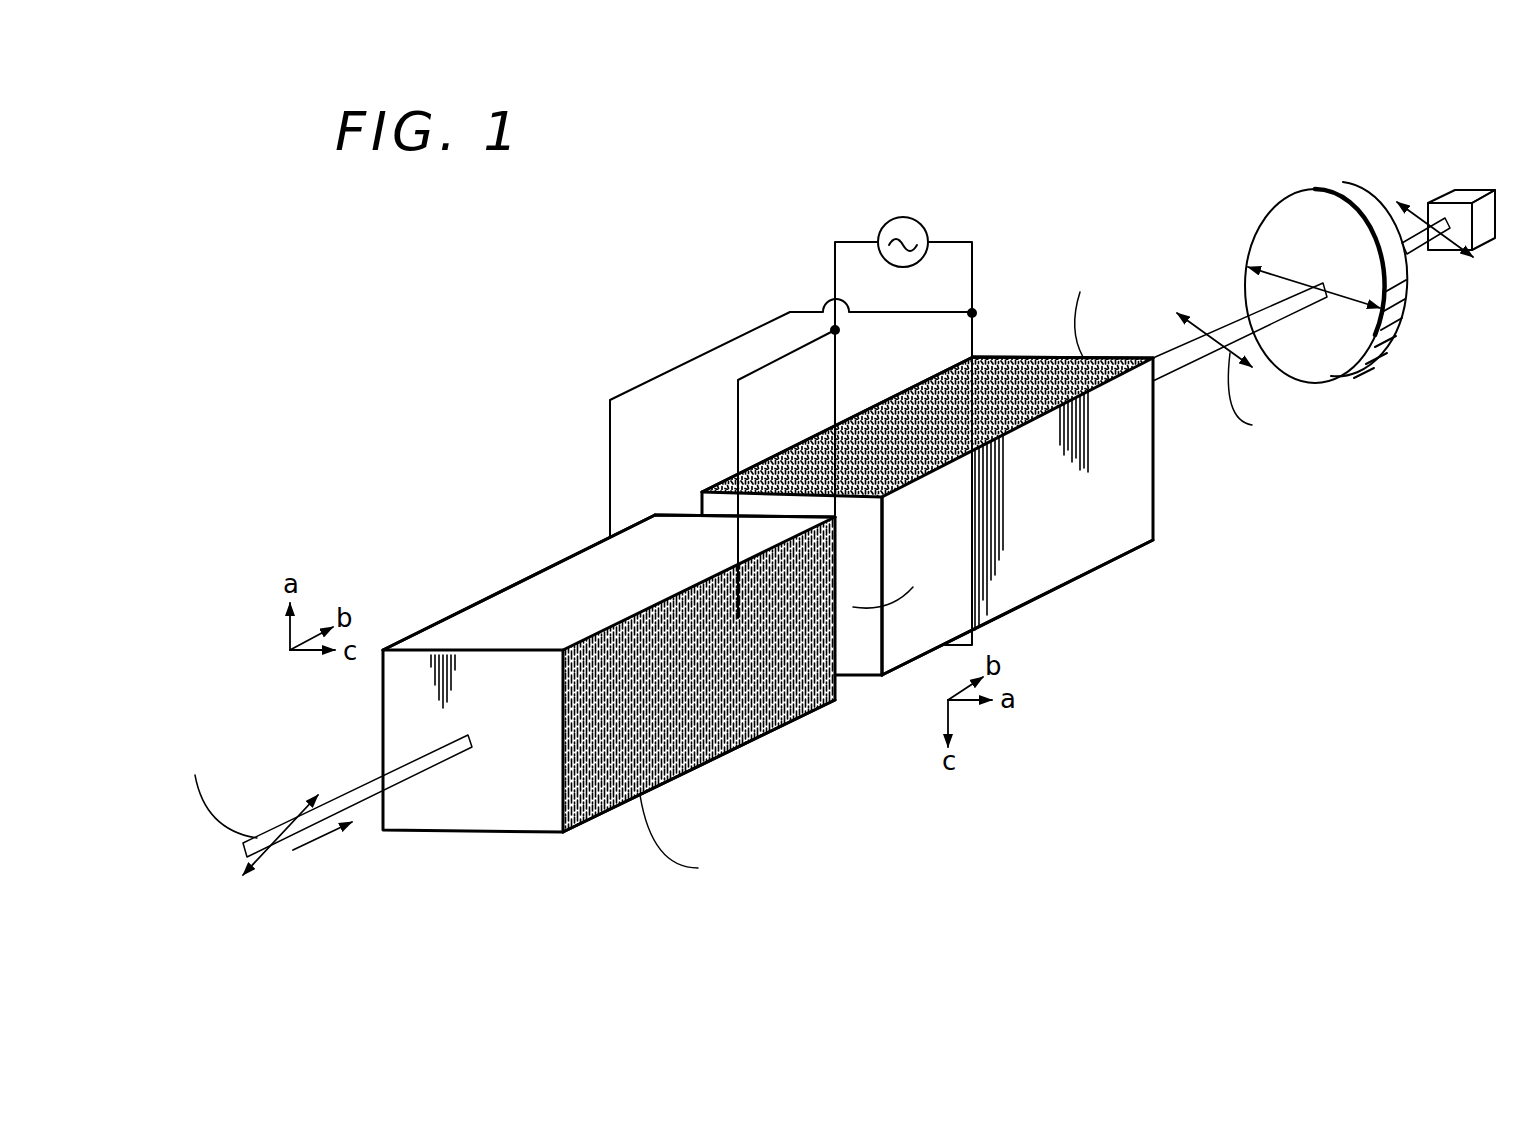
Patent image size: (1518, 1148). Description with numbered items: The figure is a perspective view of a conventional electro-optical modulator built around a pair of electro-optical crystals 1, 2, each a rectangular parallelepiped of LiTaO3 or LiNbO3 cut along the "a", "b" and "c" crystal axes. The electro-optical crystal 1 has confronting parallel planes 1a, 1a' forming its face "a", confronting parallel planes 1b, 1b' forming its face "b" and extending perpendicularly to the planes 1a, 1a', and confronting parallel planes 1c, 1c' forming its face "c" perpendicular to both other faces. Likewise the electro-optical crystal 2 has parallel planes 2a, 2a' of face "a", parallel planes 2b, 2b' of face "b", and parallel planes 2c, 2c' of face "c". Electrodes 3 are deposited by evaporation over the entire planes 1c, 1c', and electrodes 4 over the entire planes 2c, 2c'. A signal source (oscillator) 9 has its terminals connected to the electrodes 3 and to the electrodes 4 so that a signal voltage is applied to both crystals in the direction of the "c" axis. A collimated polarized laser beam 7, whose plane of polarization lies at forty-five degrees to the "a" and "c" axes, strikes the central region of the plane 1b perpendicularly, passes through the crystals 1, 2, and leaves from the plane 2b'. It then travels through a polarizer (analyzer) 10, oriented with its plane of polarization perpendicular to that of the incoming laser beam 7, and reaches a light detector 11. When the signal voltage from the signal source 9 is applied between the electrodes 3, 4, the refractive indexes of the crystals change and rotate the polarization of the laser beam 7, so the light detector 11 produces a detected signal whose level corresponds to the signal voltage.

The electro-optical crystal 1 is at (732, 752).
The plane 1a is at (609, 557).
The plane 1a' is at (699, 790).
The plane 1b is at (499, 769).
The plane 1b' is at (736, 477).
The plane 1c is at (699, 713).
The plane 1c' is at (519, 582).
The electro-optical crystal 2 is at (1010, 580).
The plane 2a is at (1046, 516).
The plane 2a' is at (837, 424).
The plane 2b is at (827, 612).
The plane 2b' is at (1063, 312).
The plane 2c is at (927, 382).
The plane 2c' is at (1053, 607).
The electrodes 3 is at (530, 577).
The electrodes 4 is at (757, 467).
The collimated polarized laser beam 7 is at (417, 762).
The signal source (oscillator) 9 is at (903, 217).
The polarizer (analyzer) 10 is at (1312, 193).
The light detector 11 is at (1458, 190).